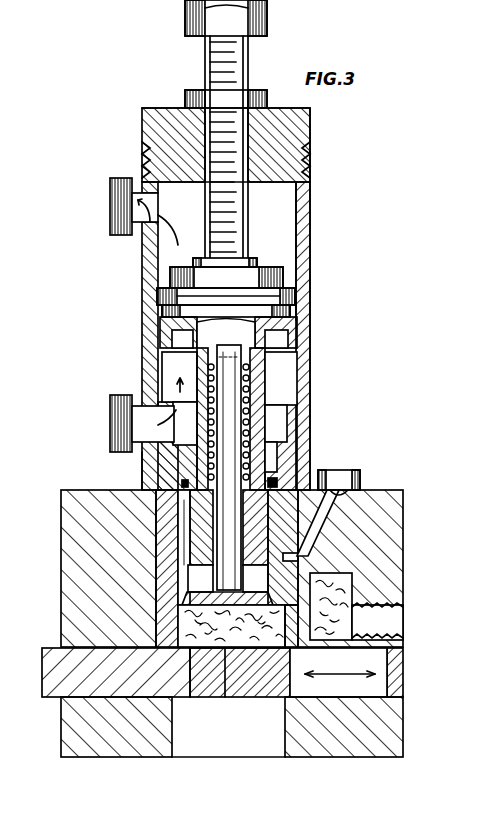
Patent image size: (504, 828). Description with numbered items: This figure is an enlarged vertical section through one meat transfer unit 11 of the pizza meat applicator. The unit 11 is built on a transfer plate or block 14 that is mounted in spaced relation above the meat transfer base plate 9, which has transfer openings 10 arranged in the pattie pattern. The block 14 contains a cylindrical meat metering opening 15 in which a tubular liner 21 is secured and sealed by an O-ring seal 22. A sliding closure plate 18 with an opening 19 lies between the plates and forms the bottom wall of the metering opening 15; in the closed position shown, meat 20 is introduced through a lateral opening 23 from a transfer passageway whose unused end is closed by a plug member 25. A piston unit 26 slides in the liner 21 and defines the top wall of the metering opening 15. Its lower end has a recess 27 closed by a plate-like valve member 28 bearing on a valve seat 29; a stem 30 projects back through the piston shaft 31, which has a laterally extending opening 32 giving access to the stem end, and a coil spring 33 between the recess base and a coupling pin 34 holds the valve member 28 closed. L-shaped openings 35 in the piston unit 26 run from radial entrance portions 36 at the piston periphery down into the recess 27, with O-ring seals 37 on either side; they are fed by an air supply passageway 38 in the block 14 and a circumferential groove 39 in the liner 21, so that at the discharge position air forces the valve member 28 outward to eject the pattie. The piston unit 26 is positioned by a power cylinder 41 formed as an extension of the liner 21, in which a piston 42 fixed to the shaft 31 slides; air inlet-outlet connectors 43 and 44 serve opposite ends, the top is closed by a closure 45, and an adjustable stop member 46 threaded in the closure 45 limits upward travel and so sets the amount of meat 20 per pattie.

The meat transfer base plate 9 is at (112, 757).
The transfer openings 10 is at (275, 757).
The meat transfer unit 11 is at (313, 150).
The transfer plate or block 14 is at (405, 545).
The meat metering opening 15 is at (180, 612).
The sliding closure plate 18 is at (262, 680).
The opening 19 is at (392, 672).
The meat 20 is at (225, 697).
The tubular liner 21 is at (165, 542).
The O-ring seal 22 is at (155, 502).
The lateral opening 23 is at (318, 600).
The plug member 25 is at (405, 610).
The piston unit 26 is at (175, 578).
The end chamber or recess 27 is at (230, 467).
The valve member 28 is at (190, 697).
The valve seat 29 is at (338, 672).
The stem 30 is at (260, 445).
The piston shaft 31 is at (265, 385).
The laterally extending opening 32 is at (280, 368).
The coil spring 33 is at (280, 416).
The coupling pin 34 is at (178, 368).
The L-shaped openings 35 is at (229, 541).
The radial entrance portion 36 is at (312, 468).
The O-ring seals 37 is at (150, 464).
The air supply passageway 38 is at (330, 508).
The circumferential groove 39 is at (178, 556).
The power cylinder 41 is at (312, 248).
The piston 42 is at (298, 296).
The air inlet-outlet connector 43 is at (118, 236).
The air inlet-outlet connector 44 is at (116, 424).
The closure 45 is at (175, 130).
The adjustable stop member 46 is at (243, 216).